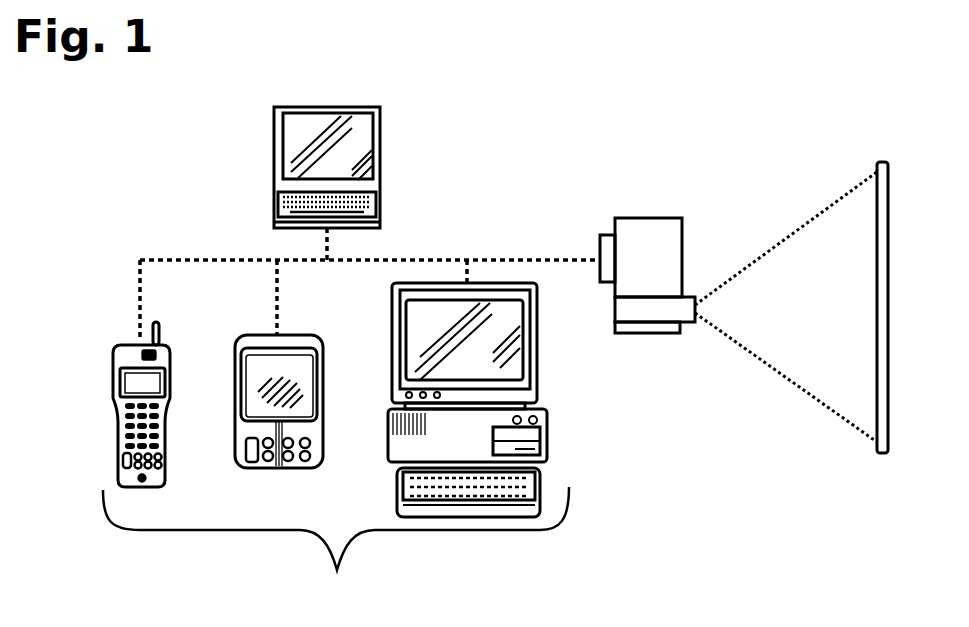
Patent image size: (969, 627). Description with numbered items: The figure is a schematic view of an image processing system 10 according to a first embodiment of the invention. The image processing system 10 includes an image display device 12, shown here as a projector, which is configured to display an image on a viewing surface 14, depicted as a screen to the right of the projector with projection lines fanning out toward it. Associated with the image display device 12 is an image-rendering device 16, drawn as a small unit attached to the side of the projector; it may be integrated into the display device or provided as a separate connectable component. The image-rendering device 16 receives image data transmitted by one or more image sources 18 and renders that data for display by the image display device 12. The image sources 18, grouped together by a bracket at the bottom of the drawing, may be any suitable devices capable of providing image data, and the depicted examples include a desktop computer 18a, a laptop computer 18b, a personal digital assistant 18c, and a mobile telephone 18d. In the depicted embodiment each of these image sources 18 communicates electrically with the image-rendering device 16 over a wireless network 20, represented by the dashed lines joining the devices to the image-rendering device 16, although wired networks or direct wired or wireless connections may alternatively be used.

The image processing system 10 is at (721, 84).
The image display device 12 is at (657, 218).
The viewing surface 14 is at (888, 190).
The image-rendering device 16 is at (600, 240).
The image sources 18 is at (336, 545).
The desktop computer 18a is at (622, 378).
The laptop computer 18b is at (400, 90).
The personal digital assistant 18c is at (376, 317).
The mobile telephone 18d is at (130, 345).
The wireless network 20 is at (195, 260).